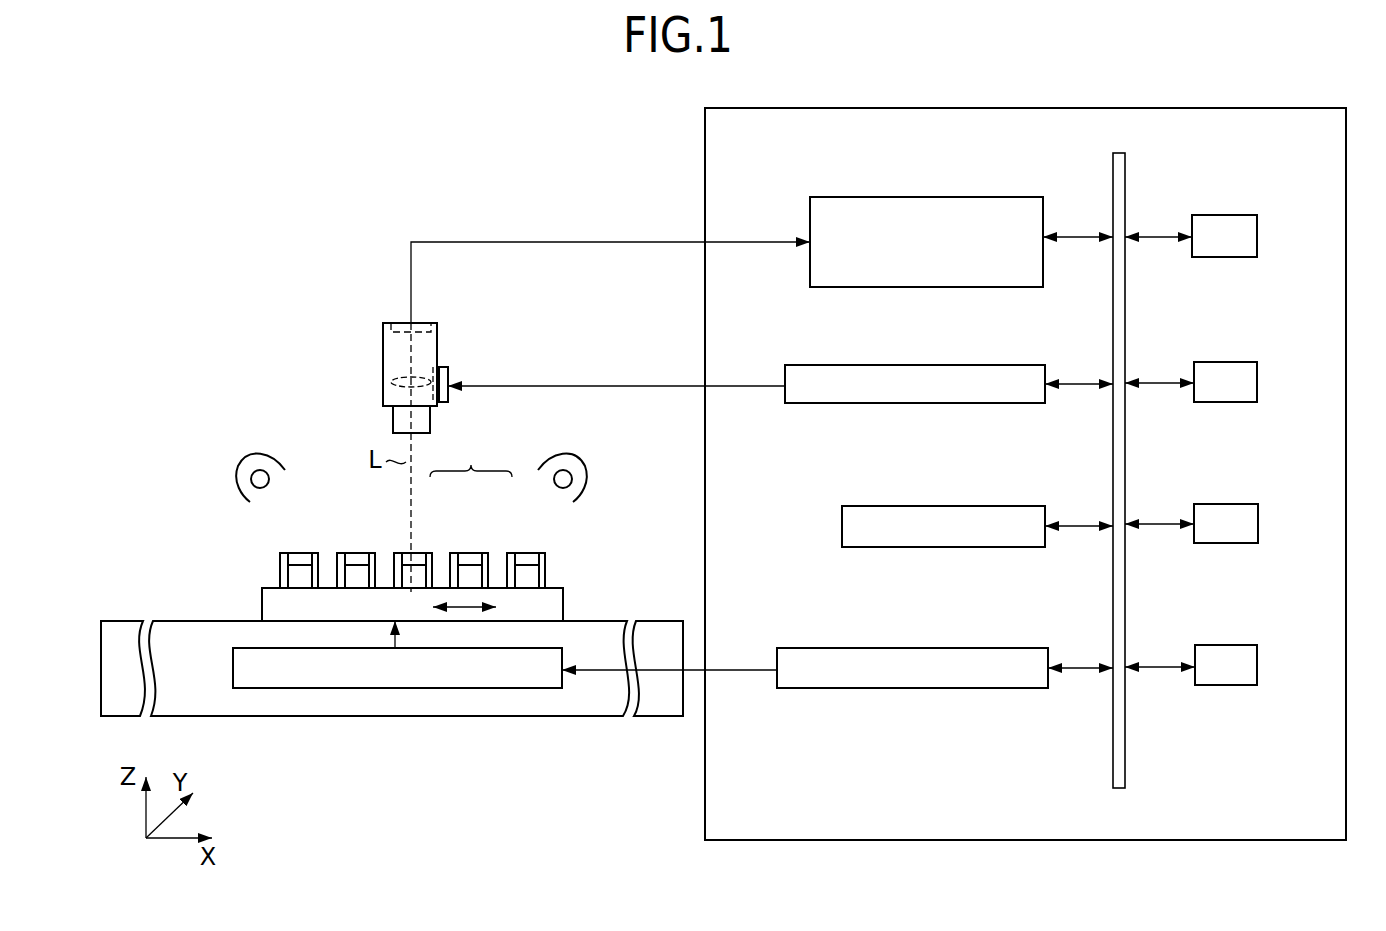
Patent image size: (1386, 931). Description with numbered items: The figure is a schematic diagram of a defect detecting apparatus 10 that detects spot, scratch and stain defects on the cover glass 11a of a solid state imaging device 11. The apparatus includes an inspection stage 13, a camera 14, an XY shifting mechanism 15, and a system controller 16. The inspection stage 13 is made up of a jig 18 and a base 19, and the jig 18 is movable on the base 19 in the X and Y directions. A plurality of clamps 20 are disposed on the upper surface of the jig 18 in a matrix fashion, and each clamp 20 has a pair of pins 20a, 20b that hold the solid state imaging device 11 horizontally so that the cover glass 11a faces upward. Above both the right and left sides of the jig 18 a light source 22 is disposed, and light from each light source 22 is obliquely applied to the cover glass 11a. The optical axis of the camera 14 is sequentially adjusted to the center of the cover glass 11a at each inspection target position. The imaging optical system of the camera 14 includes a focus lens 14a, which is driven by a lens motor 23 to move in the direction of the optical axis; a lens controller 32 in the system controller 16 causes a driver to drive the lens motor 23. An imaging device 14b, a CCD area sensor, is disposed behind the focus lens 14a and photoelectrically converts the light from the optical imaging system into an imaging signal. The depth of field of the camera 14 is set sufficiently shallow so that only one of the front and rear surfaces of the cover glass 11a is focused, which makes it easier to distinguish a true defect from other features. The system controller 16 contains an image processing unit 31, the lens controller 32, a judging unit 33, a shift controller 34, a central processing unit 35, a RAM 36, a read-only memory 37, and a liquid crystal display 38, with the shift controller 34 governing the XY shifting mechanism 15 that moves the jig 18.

The defect detecting apparatus 10 is at (216, 193).
The solid state imaging device 11 is at (384, 554).
The cover glass 11a is at (304, 553).
The inspection stage 13 is at (203, 442).
The camera 14 is at (338, 368).
The focus lens 14a is at (384, 388).
The imaging device 14b is at (427, 324).
The XY shifting mechanism 15 is at (233, 672).
The system controller 16 is at (705, 142).
The jig 18 is at (558, 603).
The base 19 is at (652, 628).
The clamp 20 is at (471, 511).
The pin 20a is at (457, 553).
The pin 20b is at (483, 553).
The light source 22 is at (268, 455).
The lens motor 23 is at (448, 370).
The image processing unit 31 is at (877, 287).
The lens controller 32 is at (893, 403).
The judging unit 33 is at (893, 547).
The shift controller 34 is at (857, 688).
The central processing unit 35 is at (1257, 237).
The RAM 36 is at (1257, 383).
The read-only memory 37 is at (1258, 524).
The liquid crystal display 38 is at (1257, 667).